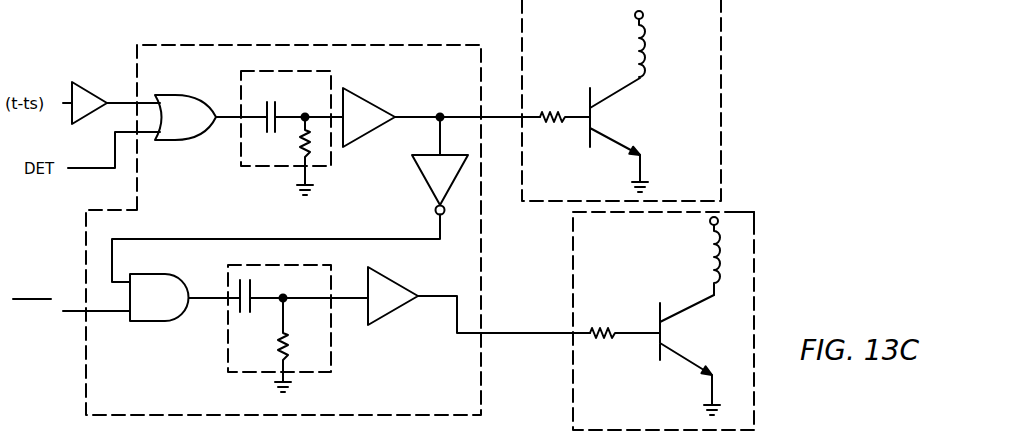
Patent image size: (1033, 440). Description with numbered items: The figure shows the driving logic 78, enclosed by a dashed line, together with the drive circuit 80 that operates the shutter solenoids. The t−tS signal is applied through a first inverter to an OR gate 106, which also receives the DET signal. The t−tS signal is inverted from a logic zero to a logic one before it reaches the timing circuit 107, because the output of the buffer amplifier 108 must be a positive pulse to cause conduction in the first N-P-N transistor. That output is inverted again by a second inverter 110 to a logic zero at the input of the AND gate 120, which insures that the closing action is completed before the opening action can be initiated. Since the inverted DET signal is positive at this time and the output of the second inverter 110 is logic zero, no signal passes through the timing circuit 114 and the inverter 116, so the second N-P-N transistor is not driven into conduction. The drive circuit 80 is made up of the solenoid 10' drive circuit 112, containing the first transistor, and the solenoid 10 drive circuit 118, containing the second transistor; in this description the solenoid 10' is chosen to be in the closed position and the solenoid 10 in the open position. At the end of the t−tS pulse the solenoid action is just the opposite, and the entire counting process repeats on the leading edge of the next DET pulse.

The driving logic 78 is at (413, 44).
The drive circuit 80 is at (674, 215).
The OR gate 106 is at (171, 95).
The timing circuit 107 is at (336, 77).
The buffer amplifier 108 is at (368, 98).
The second inverter 110 is at (430, 196).
The solenoid 10′ drive circuit 112 is at (661, 100).
The solenoid 10' is at (667, 48).
The solenoid 10 drive circuit 118 is at (700, 317).
The solenoid 10 is at (690, 260).
The AND gate 120 is at (170, 273).
The timing circuit 114 is at (326, 372).
The inverter 116 is at (378, 322).